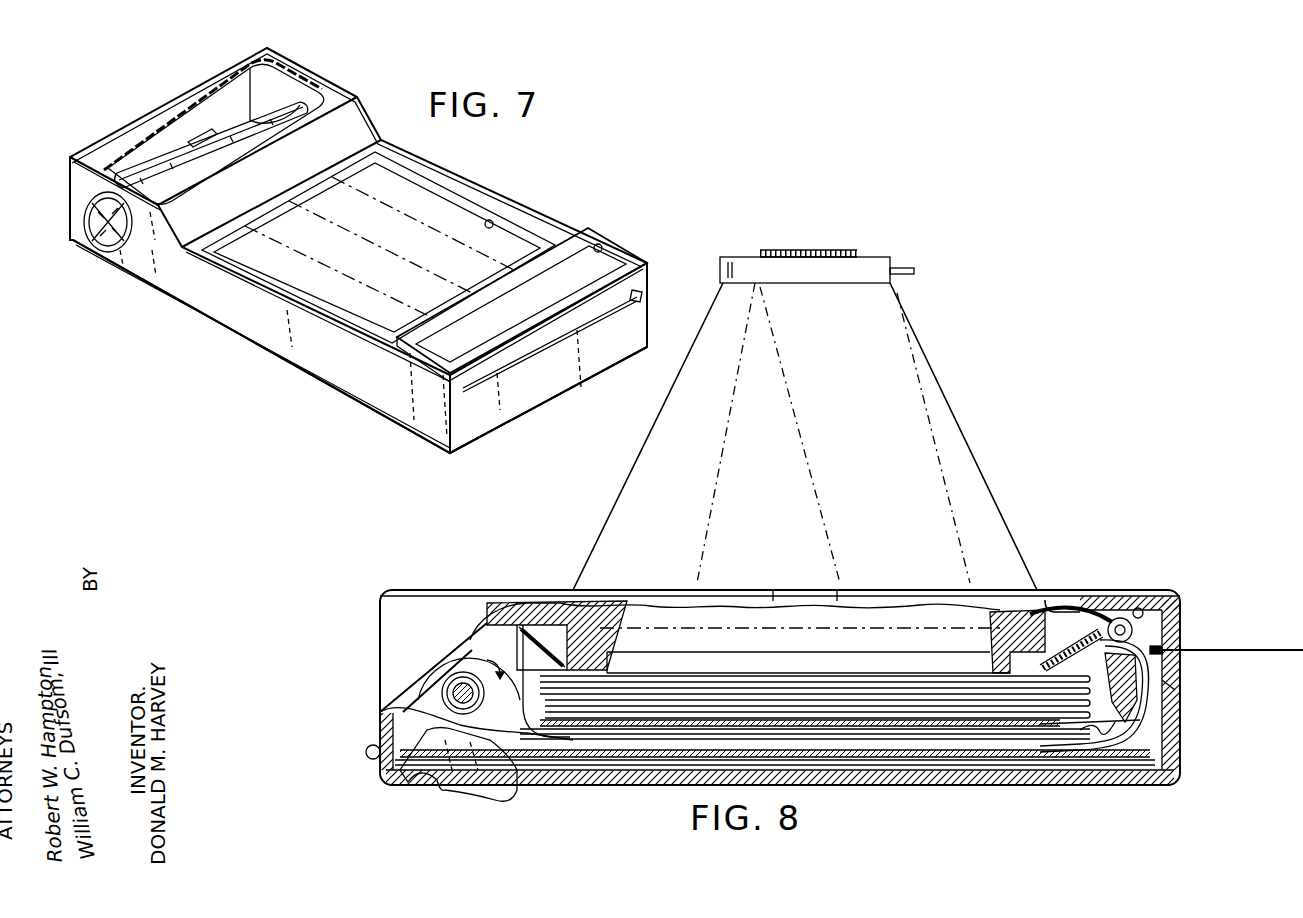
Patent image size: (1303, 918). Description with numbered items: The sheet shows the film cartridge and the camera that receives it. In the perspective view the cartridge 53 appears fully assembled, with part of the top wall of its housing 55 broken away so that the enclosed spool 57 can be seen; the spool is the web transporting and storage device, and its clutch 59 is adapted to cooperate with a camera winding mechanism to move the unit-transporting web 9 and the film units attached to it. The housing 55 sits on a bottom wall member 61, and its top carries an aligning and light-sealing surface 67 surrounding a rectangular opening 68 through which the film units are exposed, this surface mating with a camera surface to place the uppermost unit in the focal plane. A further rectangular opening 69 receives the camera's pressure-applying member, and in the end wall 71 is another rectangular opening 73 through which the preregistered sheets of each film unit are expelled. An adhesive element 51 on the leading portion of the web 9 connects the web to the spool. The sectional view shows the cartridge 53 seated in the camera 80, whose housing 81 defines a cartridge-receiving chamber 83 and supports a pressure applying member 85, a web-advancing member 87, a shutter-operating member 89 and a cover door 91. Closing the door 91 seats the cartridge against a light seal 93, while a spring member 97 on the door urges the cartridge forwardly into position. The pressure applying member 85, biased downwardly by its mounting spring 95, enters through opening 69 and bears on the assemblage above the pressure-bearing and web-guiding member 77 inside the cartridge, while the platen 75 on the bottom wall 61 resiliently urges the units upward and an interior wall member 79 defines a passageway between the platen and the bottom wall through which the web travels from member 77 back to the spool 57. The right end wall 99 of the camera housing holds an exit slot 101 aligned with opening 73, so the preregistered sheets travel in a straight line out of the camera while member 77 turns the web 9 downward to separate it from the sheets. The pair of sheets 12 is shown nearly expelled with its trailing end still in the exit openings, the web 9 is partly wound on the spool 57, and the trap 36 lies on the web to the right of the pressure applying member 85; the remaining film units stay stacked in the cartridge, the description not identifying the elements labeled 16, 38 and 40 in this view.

In FIG. 8, the unit-transporting web 9 is at (496, 686).
In FIG. 8, the pair of sheets 12 is at (1273, 650).
In FIG. 8, the cord guide 16 is at (1142, 720).
In FIG. 8, the trap 36 is at (1180, 683).
In FIG. 8, the film sheet stack 38 is at (625, 743).
In FIG. 8, the separator sheet 40 is at (638, 745).
In FIG. 7, the adhesive element 51 is at (202, 146).
In FIG. 7, the cartridge 53 is at (137, 294).
In FIG. 8, the cartridge 53 is at (541, 618).
In FIG. 7, the housing 55 is at (333, 88).
In FIG. 7, the spool 57 is at (242, 123).
In FIG. 8, the spool 57 is at (450, 675).
In FIG. 7, the clutch 59 is at (90, 230).
In FIG. 7, the bottom wall member 61 is at (245, 337).
In FIG. 8, the bottom wall member 61 is at (1005, 790).
In FIG. 7, the aligning and light-sealing surface 67 is at (453, 183).
In FIG. 7, the rectangular opening 68 is at (493, 220).
In FIG. 7, the rectangular opening 69 is at (601, 246).
In FIG. 8, the rectangular opening 69 is at (1090, 632).
In FIG. 7, the end wall 71 is at (636, 327).
In FIG. 8, the end wall 71 is at (1193, 741).
In FIG. 7, the rectangular opening 73 is at (640, 292).
In FIG. 8, the rectangular opening 73 is at (1147, 658).
In FIG. 8, the platen 75 is at (590, 732).
In FIG. 8, the pressure-bearing and web-guiding member 77 is at (1133, 683).
In FIG. 8, the interior wall member 79 is at (1095, 727).
In FIG. 8, the camera 80 is at (952, 382).
In FIG. 8, the housing 81 is at (1107, 600).
In FIG. 8, the cartridge-receiving chamber 83 is at (1146, 608).
In FIG. 8, the pressure applying member 85 is at (1123, 618).
In FIG. 8, the web-advancing member 87 is at (443, 790).
In FIG. 8, the shutter-operating member 89 is at (915, 271).
In FIG. 8, the cover door 91 is at (1137, 790).
In FIG. 8, the light seal 93 is at (608, 667).
In FIG. 8, the mounting spring 95 is at (1083, 608).
In FIG. 8, the spring member 97 is at (928, 780).
In FIG. 8, the right end wall 99 is at (1187, 605).
In FIG. 8, the exit slot 101 is at (1180, 648).